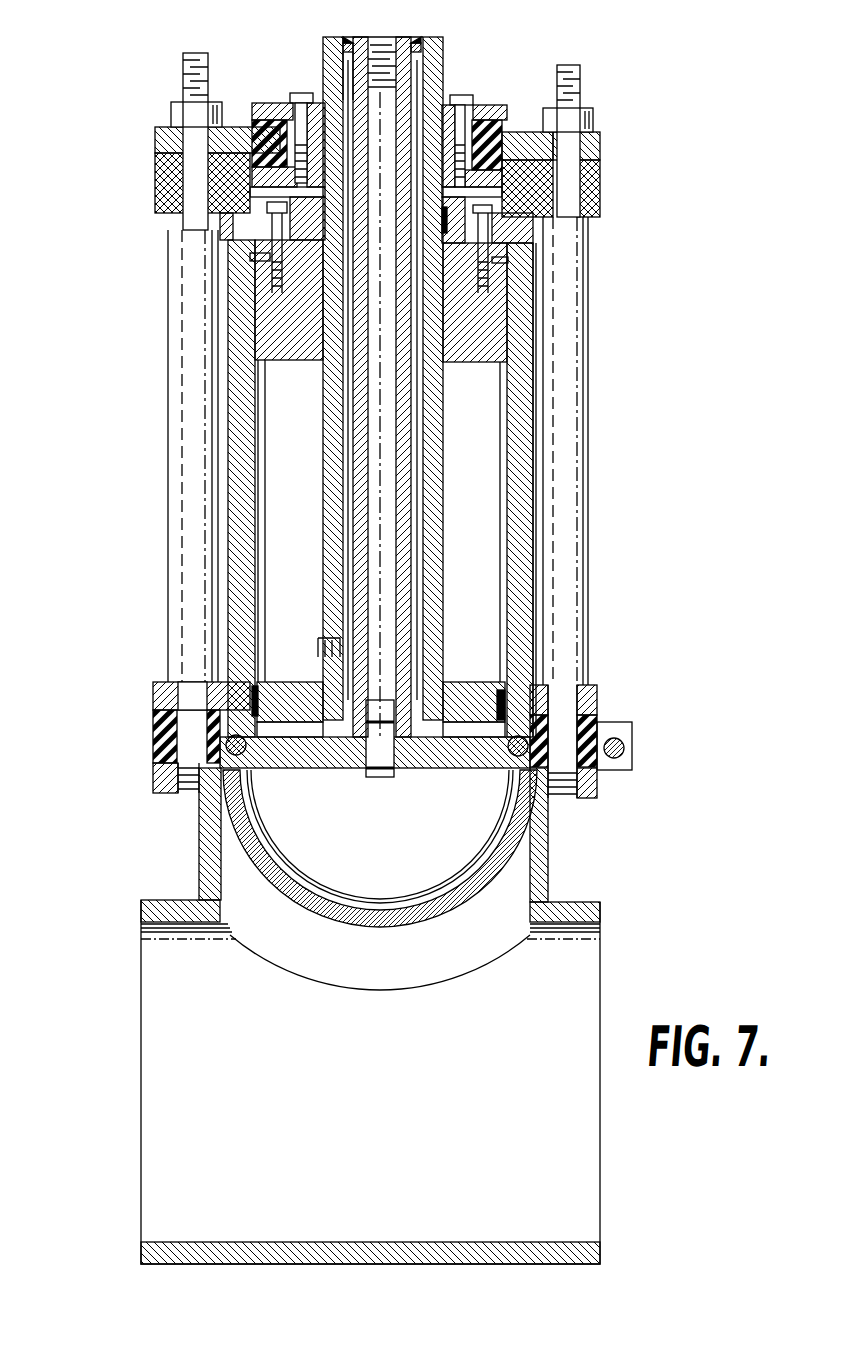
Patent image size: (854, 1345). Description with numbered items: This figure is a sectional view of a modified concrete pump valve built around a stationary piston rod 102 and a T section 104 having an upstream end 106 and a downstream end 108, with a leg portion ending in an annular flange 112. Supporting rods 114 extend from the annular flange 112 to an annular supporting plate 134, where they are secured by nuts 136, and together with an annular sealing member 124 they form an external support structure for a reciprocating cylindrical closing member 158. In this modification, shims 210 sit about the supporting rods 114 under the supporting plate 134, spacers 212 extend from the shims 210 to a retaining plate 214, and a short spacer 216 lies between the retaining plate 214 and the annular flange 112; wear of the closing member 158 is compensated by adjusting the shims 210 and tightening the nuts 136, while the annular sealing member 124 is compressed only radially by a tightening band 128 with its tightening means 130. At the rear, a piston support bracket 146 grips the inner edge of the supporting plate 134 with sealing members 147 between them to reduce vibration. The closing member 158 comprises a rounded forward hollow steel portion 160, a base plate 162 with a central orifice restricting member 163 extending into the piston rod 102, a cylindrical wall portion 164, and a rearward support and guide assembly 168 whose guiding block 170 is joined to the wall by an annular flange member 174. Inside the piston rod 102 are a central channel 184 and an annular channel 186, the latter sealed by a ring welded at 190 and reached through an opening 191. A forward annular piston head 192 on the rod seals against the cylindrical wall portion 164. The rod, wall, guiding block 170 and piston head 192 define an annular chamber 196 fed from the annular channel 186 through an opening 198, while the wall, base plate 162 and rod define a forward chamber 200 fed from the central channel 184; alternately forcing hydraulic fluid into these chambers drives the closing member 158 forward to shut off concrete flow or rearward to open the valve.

The piston rod 102 is at (425, 456).
The T section 104 is at (577, 903).
The upstream end 106 is at (142, 984).
The downstream end 108 is at (600, 943).
The annular flange 112 is at (168, 778).
The supporting rods 114 is at (193, 288).
The annular sealing member 124 is at (153, 766).
The tightening band 128 is at (153, 722).
The tightening means 130 is at (633, 752).
The annular supporting plate 134 is at (167, 143).
The nuts 136 is at (178, 117).
The piston support bracket 146 is at (483, 103).
The sealing members 147 is at (291, 124).
The cylindrical closing member 158 is at (534, 380).
The rounded forward hollow steel portion 160 is at (364, 921).
The base plate 162 is at (452, 758).
The orifice restricting member 163 is at (378, 770).
The cylindrical wall portion 164 is at (530, 413).
The rearward support and guide assembly 168 is at (528, 255).
The guiding block 170 is at (272, 329).
The annular flange member 174 is at (245, 240).
The central channel 184 is at (385, 412).
The annular channel 186 is at (345, 482).
The weld 190 is at (283, 456).
The opening 191 is at (327, 75).
The forward annular piston head 192 is at (458, 695).
The annular chamber 196 is at (228, 338).
The opening 198 is at (318, 652).
The forward chamber 200 is at (300, 735).
The shims 210 is at (598, 180).
The spacers 212 is at (168, 377).
The retaining plate 214 is at (596, 690).
The short spacer 216 is at (597, 717).